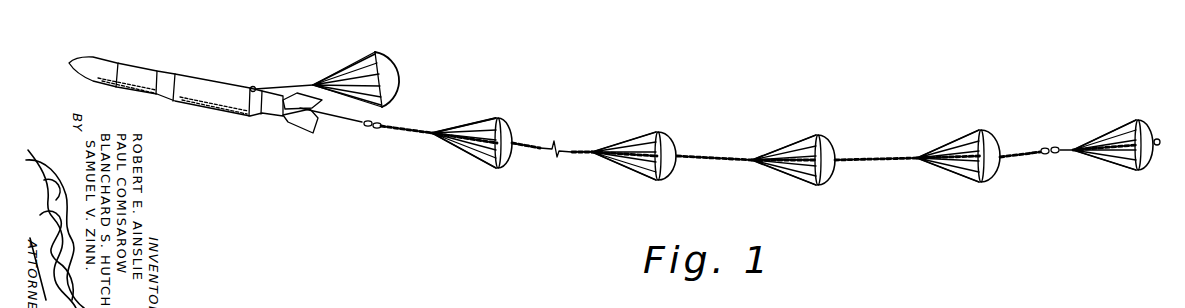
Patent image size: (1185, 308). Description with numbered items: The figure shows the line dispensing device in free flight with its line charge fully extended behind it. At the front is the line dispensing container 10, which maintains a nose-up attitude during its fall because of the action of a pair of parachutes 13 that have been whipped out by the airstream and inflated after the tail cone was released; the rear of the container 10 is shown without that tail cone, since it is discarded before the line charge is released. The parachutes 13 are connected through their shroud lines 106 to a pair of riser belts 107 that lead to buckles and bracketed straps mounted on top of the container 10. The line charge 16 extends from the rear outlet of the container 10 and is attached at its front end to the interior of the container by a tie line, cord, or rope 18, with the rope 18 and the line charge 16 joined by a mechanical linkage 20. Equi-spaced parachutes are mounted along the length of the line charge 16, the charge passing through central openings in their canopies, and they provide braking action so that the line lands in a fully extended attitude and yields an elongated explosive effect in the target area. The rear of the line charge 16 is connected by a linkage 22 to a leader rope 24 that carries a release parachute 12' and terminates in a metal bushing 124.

The line dispensing container 10 is at (211, 124).
The riser belts 107 is at (285, 80).
The shroud lines 106 is at (353, 60).
The parachutes 13 is at (397, 54).
The tie line, cord, or rope 18 is at (339, 122).
The mechanical linkage 20 is at (368, 129).
The line charge 16 is at (708, 155).
The leader rope 24 is at (1061, 148).
The linkage 22 is at (1051, 155).
The release parachute 12' is at (1123, 170).
The metal bushing 124 is at (1158, 138).